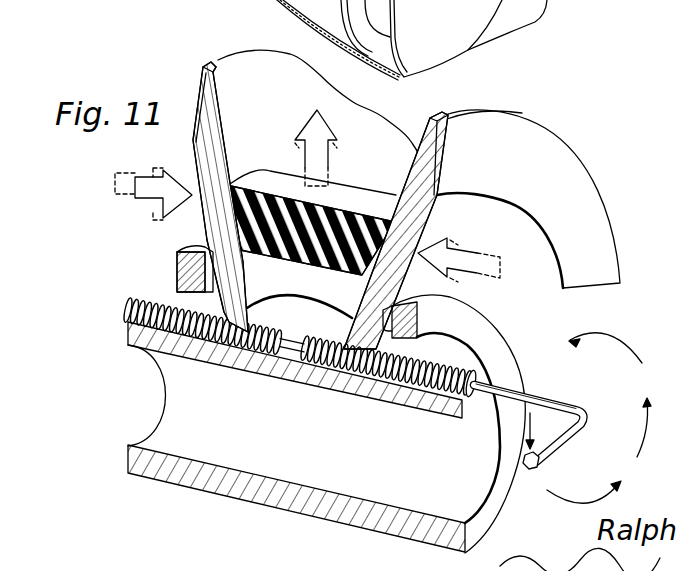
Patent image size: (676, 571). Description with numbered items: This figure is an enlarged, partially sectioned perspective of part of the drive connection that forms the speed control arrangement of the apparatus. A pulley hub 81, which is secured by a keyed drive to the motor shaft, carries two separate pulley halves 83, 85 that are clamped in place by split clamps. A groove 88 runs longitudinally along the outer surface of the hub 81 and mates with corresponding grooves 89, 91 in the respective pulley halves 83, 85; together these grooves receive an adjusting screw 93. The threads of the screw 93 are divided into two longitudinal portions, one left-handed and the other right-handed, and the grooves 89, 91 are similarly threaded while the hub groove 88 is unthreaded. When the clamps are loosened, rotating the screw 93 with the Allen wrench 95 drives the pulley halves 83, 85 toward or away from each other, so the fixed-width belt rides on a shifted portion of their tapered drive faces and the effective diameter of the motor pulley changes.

The pulley hub 81 is at (146, 432).
The pulley half 83 is at (219, 58).
The pulley half 85 is at (532, 122).
The groove 88 is at (287, 347).
The groove 89 is at (235, 324).
The groove 91 is at (412, 363).
The adjusting screw 93 is at (298, 341).
The Allen wrench 95 is at (538, 390).